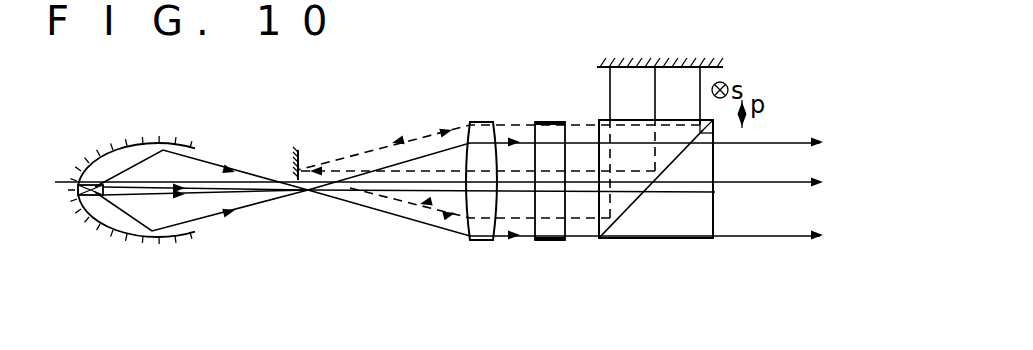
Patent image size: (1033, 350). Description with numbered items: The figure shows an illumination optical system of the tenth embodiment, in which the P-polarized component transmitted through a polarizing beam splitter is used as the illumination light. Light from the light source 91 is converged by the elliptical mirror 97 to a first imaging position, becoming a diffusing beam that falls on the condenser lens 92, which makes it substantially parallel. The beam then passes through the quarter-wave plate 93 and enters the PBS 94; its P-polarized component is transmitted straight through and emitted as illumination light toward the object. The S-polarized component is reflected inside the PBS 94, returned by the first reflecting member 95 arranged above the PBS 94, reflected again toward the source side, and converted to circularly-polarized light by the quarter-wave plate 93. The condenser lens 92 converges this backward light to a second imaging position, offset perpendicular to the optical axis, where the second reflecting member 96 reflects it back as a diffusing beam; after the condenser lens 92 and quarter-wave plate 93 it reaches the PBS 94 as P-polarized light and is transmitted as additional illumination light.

The light source 91 is at (90, 197).
The condenser lens 92 is at (478, 241).
The quarter-wave plate 93 is at (548, 241).
The PBS 94 is at (640, 240).
The first reflecting member 95 is at (598, 68).
The second reflecting member 96 is at (300, 152).
The elliptical mirror 97 is at (190, 238).